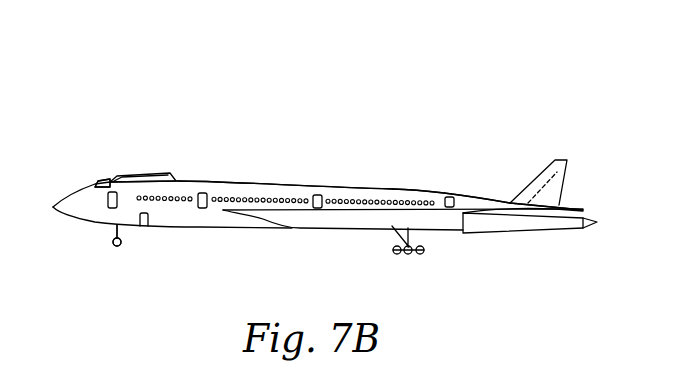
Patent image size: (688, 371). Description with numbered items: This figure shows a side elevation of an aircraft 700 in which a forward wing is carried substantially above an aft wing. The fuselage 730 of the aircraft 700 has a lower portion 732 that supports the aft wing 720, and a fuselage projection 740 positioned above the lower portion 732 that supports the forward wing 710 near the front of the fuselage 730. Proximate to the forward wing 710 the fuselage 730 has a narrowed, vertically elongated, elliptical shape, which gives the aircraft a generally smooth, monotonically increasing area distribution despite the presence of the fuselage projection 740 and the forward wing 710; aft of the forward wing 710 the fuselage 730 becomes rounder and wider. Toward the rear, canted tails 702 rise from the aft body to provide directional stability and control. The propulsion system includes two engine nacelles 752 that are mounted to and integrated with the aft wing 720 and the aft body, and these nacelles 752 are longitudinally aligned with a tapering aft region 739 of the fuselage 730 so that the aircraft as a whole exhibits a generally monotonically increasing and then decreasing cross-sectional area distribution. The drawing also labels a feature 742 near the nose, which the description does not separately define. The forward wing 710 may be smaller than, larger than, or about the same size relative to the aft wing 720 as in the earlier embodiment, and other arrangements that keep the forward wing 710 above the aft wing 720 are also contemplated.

The aircraft 700 is at (323, 78).
The canted tails 702 is at (566, 174).
The forward wing 710 is at (157, 173).
The aft wing 720 is at (436, 203).
The fuselage 730 is at (346, 182).
The lower portion 732 is at (173, 208).
The tapering aft region 739 is at (487, 186).
The fuselage projection 740 is at (177, 181).
The cockpit 742 is at (105, 179).
The engine nacelles 752 is at (515, 222).